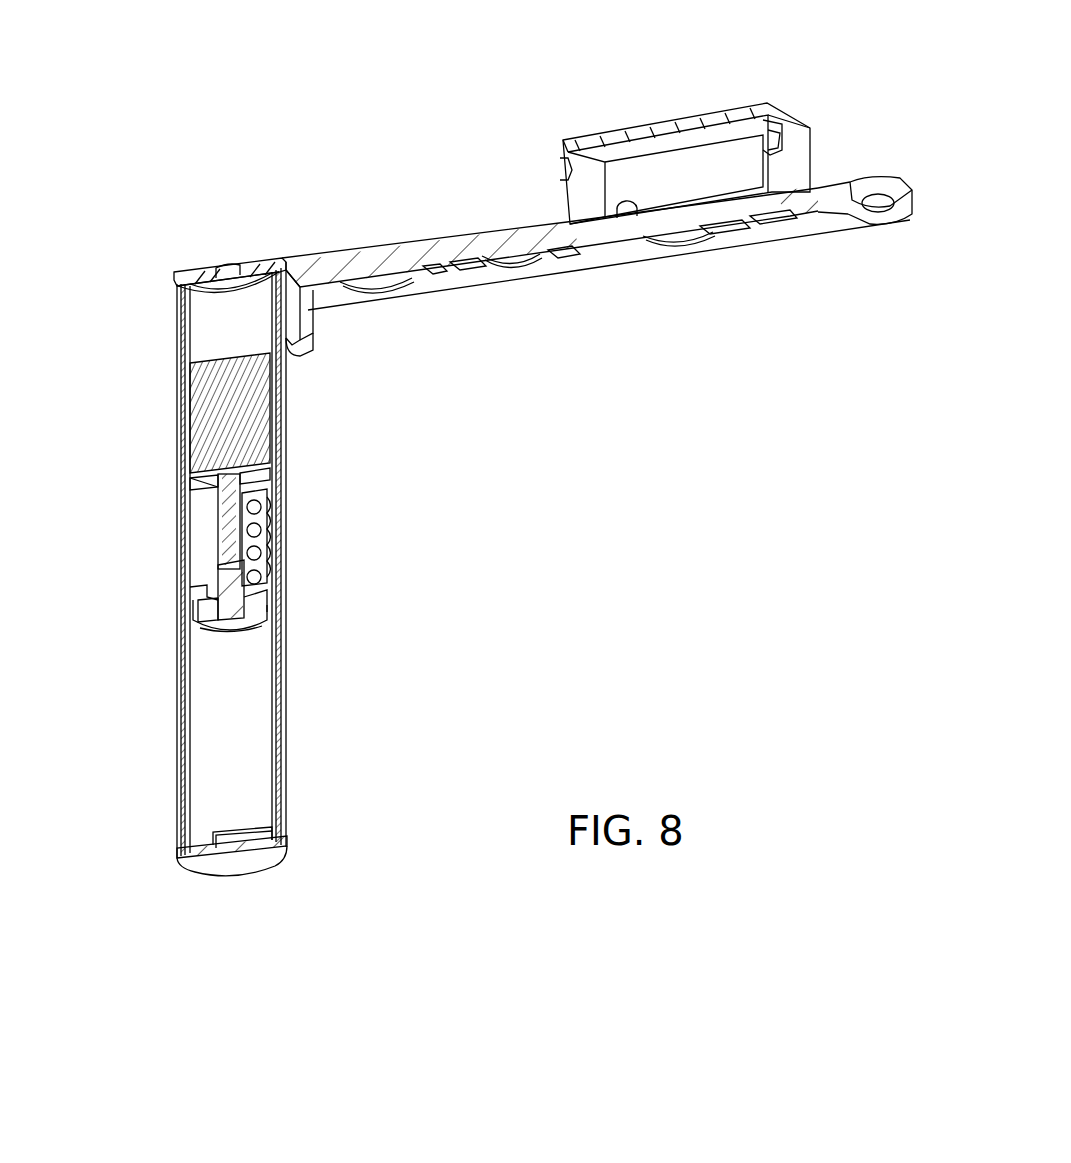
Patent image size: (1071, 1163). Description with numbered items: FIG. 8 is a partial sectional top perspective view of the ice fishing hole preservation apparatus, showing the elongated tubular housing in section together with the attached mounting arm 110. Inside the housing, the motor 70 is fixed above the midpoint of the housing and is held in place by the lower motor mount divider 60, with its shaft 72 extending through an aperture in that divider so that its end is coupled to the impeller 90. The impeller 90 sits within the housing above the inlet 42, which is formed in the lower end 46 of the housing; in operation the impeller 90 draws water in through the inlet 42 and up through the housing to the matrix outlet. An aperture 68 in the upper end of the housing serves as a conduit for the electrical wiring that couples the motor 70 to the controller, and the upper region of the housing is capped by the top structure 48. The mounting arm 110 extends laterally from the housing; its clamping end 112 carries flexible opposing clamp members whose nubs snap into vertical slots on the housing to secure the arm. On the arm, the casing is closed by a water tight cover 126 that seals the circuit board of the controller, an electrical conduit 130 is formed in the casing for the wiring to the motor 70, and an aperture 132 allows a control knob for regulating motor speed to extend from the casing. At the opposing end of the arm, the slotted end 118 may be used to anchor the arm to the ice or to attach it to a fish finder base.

The inlet 42 is at (215, 840).
The lower end 46 is at (250, 864).
The tube top cap 48 is at (188, 270).
The lower motor mount divider 60 is at (190, 493).
The aperture 68 is at (233, 264).
The motor 70 is at (208, 412).
The shaft 72 is at (218, 552).
The impeller 90 is at (203, 630).
The mounting arm 110 is at (592, 275).
The clamping end 112 is at (318, 345).
The hook end 118 is at (848, 215).
The water tight cover 126 is at (666, 125).
The electrical conduit 130 is at (556, 160).
The aperture 132 is at (772, 143).